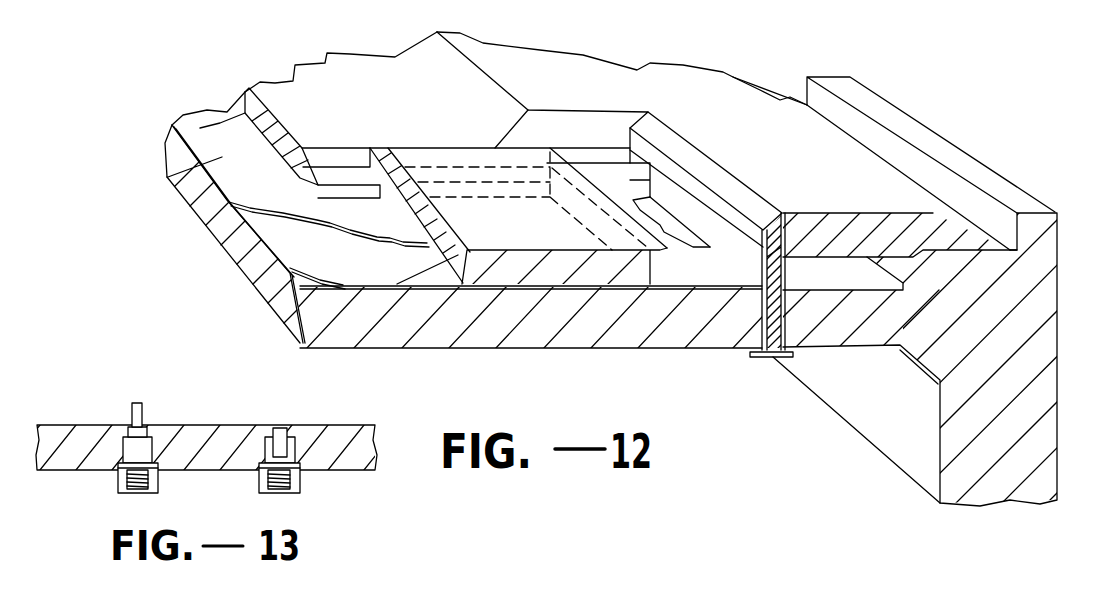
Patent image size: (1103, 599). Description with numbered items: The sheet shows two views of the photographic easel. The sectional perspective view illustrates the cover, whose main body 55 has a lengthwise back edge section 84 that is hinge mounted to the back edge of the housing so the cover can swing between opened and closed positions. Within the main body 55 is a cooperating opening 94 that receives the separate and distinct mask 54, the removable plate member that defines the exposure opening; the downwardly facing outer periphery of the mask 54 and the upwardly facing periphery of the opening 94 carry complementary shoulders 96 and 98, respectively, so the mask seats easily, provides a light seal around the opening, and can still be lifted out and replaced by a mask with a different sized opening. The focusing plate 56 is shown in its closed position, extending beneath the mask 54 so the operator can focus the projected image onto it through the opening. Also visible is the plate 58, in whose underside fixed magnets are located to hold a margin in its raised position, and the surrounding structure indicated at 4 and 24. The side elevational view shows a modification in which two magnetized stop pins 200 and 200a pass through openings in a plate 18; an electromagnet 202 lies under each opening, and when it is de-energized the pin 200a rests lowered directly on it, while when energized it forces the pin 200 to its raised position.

In FIG. 12, the base frame block 4 is at (1033, 236).
In FIG. 12, the support plate 24 is at (260, 293).
In FIG. 12, the mask 54 is at (513, 225).
In FIG. 12, the main body 55 is at (538, 60).
In FIG. 12, the focusing plate 56 is at (167, 182).
In FIG. 12, the plate 58 is at (617, 330).
In FIG. 12, the back edge section 84 is at (965, 233).
In FIG. 12, the opening 94 is at (320, 193).
In FIG. 12, the shoulder 96 is at (378, 185).
In FIG. 12, the shoulder 98 is at (342, 175).
In FIG. 13, the plate 18 is at (218, 458).
In FIG. 13, the stop pin 200 is at (136, 403).
In FIG. 13, the stop pin 200a is at (278, 428).
In FIG. 13, the electromagnet 202 is at (127, 480).